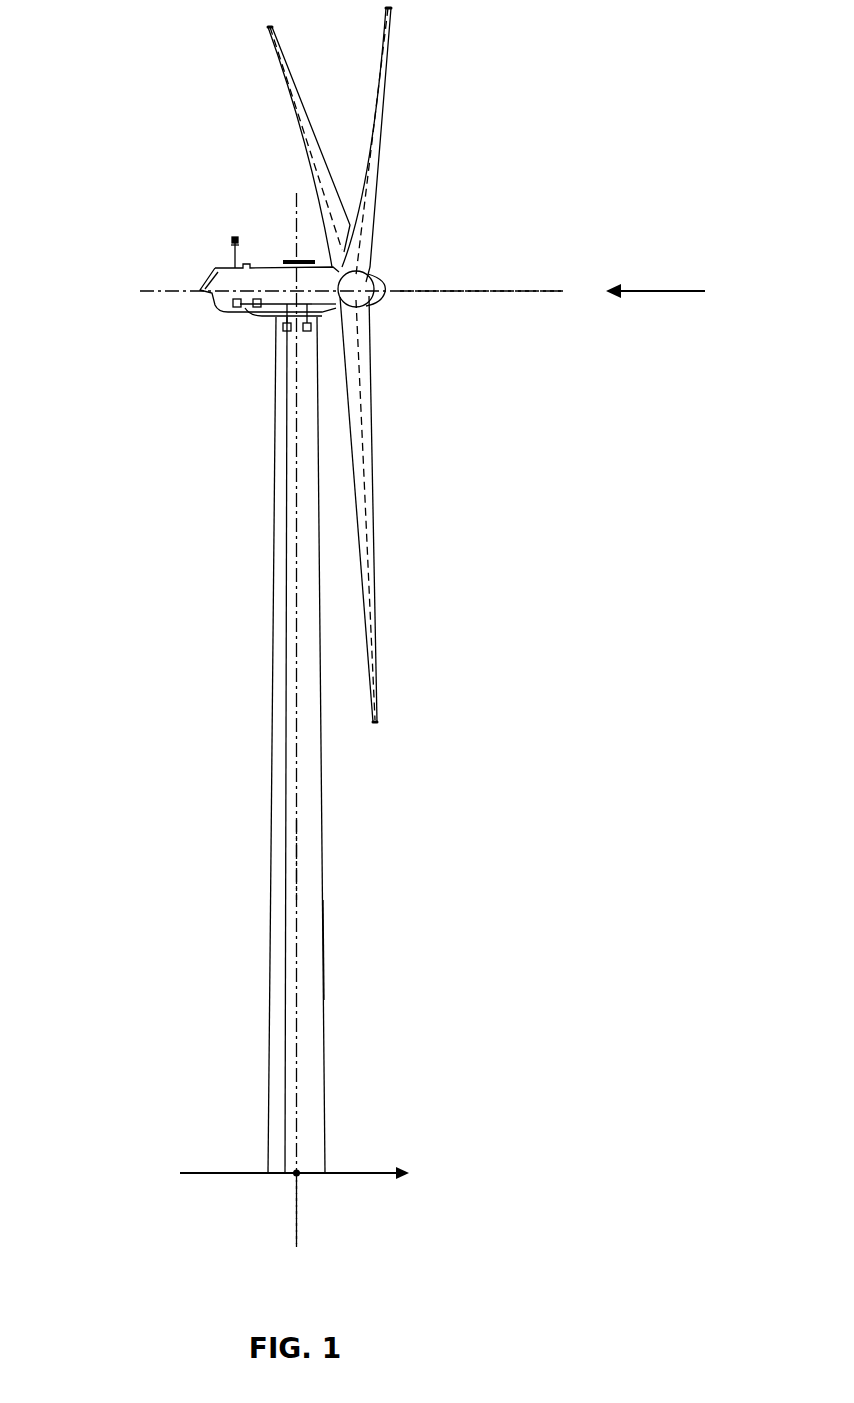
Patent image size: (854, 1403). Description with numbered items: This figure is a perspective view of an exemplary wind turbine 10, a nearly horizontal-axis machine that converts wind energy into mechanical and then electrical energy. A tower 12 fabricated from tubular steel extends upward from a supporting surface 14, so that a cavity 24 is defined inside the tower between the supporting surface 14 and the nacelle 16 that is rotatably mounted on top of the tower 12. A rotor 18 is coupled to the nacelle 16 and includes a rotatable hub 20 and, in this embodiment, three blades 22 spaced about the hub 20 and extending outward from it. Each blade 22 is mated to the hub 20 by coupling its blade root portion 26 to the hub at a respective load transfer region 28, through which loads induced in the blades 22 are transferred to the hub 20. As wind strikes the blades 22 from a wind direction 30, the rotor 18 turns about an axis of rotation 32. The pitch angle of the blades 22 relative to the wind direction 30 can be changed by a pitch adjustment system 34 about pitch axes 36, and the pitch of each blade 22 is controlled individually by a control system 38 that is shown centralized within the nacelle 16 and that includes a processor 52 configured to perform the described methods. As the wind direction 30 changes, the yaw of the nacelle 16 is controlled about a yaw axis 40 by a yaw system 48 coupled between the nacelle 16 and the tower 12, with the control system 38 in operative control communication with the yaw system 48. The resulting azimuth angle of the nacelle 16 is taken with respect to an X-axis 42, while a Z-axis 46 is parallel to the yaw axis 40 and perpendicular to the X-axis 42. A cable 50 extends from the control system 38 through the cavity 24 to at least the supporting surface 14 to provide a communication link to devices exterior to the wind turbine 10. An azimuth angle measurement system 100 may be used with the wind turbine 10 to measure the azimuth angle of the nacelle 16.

The wind turbine 10 is at (117, 35).
The tower 12 is at (270, 906).
The supporting surface 14 is at (225, 1172).
The nacelle 16 is at (240, 315).
The rotor 18 is at (404, 170).
The rotatable hub 20 is at (379, 296).
The blade 22 is at (291, 115).
The cavity 24 is at (311, 968).
The blade root portion 26 is at (363, 432).
The load transfer region 28 is at (320, 307).
The wind direction 30 is at (660, 290).
The axis of rotation 32 is at (451, 292).
The pitch adjustment system 34 is at (256, 313).
The pitch axis 36 is at (266, 28).
The control system 38 is at (236, 314).
The yaw axis 40 is at (297, 864).
The X-axis 42 is at (362, 1172).
The Z-axis 46 is at (297, 1230).
The yaw system 48 is at (281, 328).
The cable 50 is at (287, 737).
The processor 52 is at (236, 300).
The azimuth angle measurement system 100 is at (310, 331).